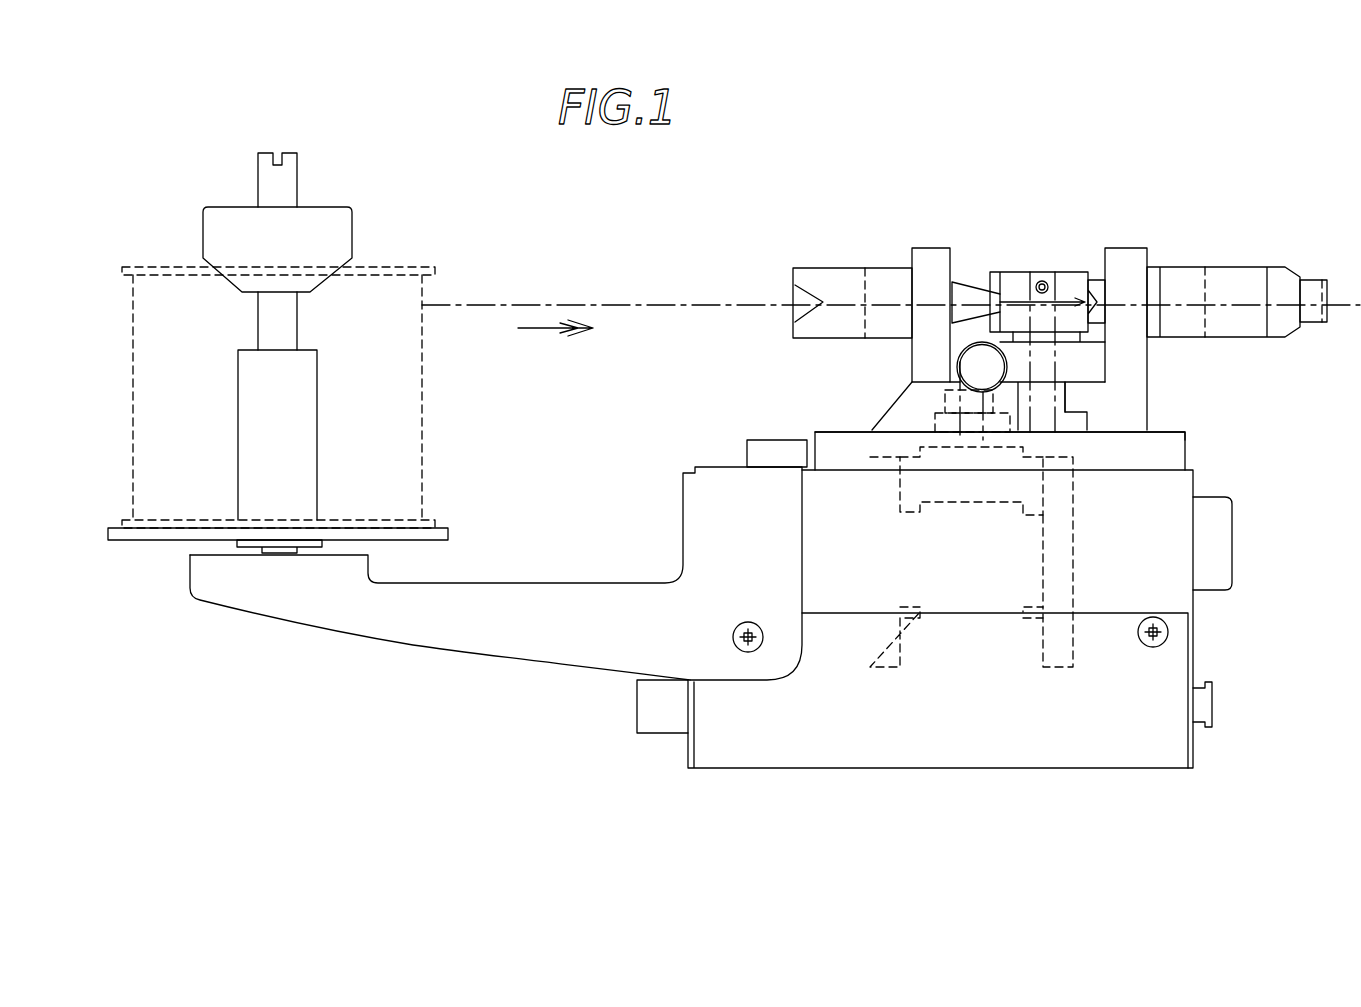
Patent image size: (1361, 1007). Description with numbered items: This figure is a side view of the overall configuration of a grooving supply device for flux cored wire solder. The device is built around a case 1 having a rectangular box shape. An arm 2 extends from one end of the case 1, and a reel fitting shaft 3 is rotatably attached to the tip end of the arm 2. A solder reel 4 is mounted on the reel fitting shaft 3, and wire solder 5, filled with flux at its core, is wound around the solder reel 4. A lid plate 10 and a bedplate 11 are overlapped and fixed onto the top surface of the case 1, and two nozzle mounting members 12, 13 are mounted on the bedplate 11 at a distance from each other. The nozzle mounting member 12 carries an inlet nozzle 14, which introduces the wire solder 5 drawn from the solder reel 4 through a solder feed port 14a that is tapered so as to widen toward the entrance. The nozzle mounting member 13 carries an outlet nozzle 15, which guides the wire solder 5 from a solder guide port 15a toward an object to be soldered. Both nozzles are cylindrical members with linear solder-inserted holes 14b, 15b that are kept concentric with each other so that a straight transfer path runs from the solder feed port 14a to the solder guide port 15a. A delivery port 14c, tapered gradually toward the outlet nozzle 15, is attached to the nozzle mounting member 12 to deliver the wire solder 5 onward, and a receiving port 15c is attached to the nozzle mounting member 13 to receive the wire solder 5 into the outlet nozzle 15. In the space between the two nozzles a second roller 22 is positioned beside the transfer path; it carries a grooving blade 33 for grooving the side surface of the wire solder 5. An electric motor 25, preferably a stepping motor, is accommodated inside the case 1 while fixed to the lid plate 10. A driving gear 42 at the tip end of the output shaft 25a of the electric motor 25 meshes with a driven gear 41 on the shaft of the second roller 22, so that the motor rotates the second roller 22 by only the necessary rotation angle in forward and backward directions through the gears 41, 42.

The case 1 is at (1095, 732).
The arm 2 is at (455, 628).
The reel fitting shaft 3 is at (255, 420).
The solder reel 4 is at (400, 402).
The wire solder 5 is at (604, 300).
The lid plate 10 is at (1158, 455).
The bedplate 11 is at (1130, 407).
The nozzle mounting member 12 is at (926, 265).
The nozzle mounting member 13 is at (1128, 262).
The inlet nozzle 14 is at (815, 282).
The solder feed port 14a is at (790, 300).
The solder-inserted hole 14b is at (865, 268).
The delivery port 14c is at (975, 287).
The outlet nozzle 15 is at (1255, 272).
The solder guide port 15a is at (1322, 295).
The solder-inserted hole 15b is at (1205, 267).
The receiving port 15c is at (1100, 290).
The second roller 22 is at (1028, 245).
The electric motor 25 is at (953, 647).
The output shaft 25a is at (945, 402).
The grooving blade 33 is at (1065, 298).
The driven gear 41 is at (1080, 413).
The driving gear 42 is at (940, 425).